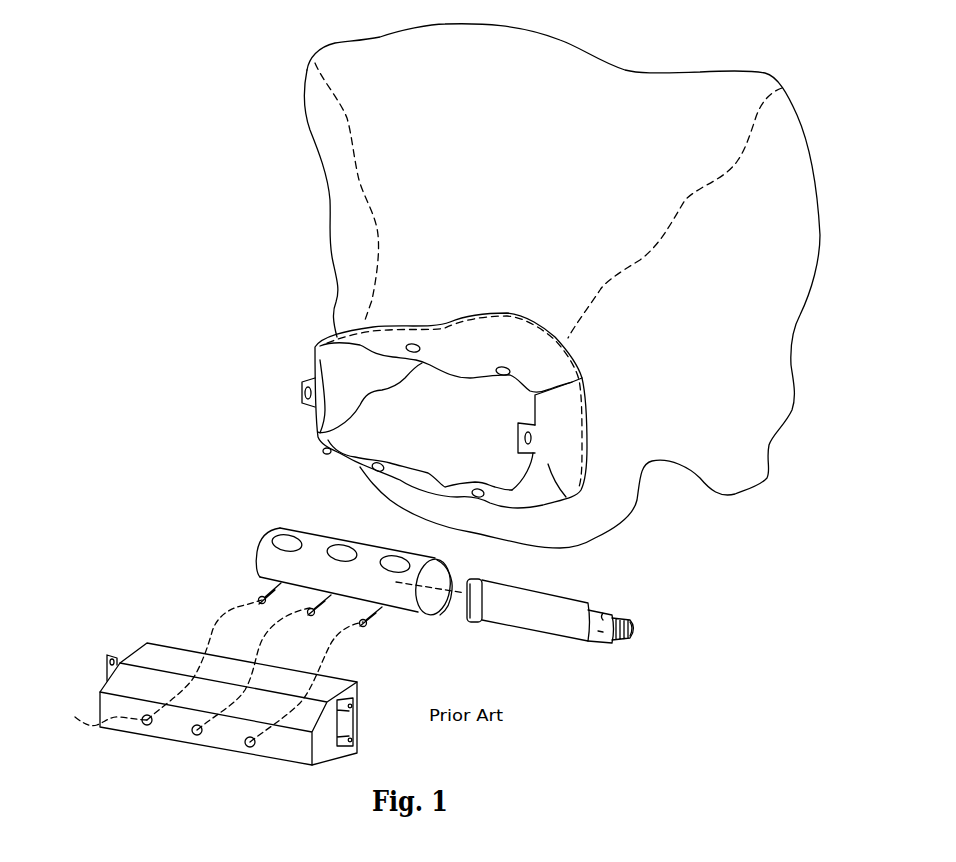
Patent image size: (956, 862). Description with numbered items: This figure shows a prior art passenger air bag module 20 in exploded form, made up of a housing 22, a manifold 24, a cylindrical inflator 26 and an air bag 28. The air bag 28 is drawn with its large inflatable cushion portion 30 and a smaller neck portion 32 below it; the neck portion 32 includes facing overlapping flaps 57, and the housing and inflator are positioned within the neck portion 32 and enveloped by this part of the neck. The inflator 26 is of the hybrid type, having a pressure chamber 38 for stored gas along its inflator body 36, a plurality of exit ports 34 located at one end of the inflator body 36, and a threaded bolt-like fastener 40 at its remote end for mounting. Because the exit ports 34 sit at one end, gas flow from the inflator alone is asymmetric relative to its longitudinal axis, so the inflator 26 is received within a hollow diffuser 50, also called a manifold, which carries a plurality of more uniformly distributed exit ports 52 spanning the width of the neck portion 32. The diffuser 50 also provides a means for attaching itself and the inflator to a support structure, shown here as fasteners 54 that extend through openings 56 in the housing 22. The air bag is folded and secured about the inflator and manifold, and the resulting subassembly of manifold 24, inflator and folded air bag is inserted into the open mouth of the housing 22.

The passenger air bag module 20 is at (527, 286).
The housing 22 is at (97, 673).
The manifold 24 is at (403, 553).
The cylindrical inflator 26 is at (558, 615).
The air bag 28 is at (348, 270).
The cushion portion 30 is at (648, 88).
The neck portion 32 is at (570, 437).
The exit ports 34 is at (603, 612).
The inflator body 36 is at (580, 597).
The pressure chamber 38 is at (545, 629).
The threaded bolt-like fastener 40 is at (632, 640).
The hollow diffuser 50 is at (314, 552).
The exit ports 52 is at (283, 545).
The fasteners 54 is at (258, 597).
The openings 56 is at (203, 671).
The facing overlapping flaps 57 is at (335, 372).